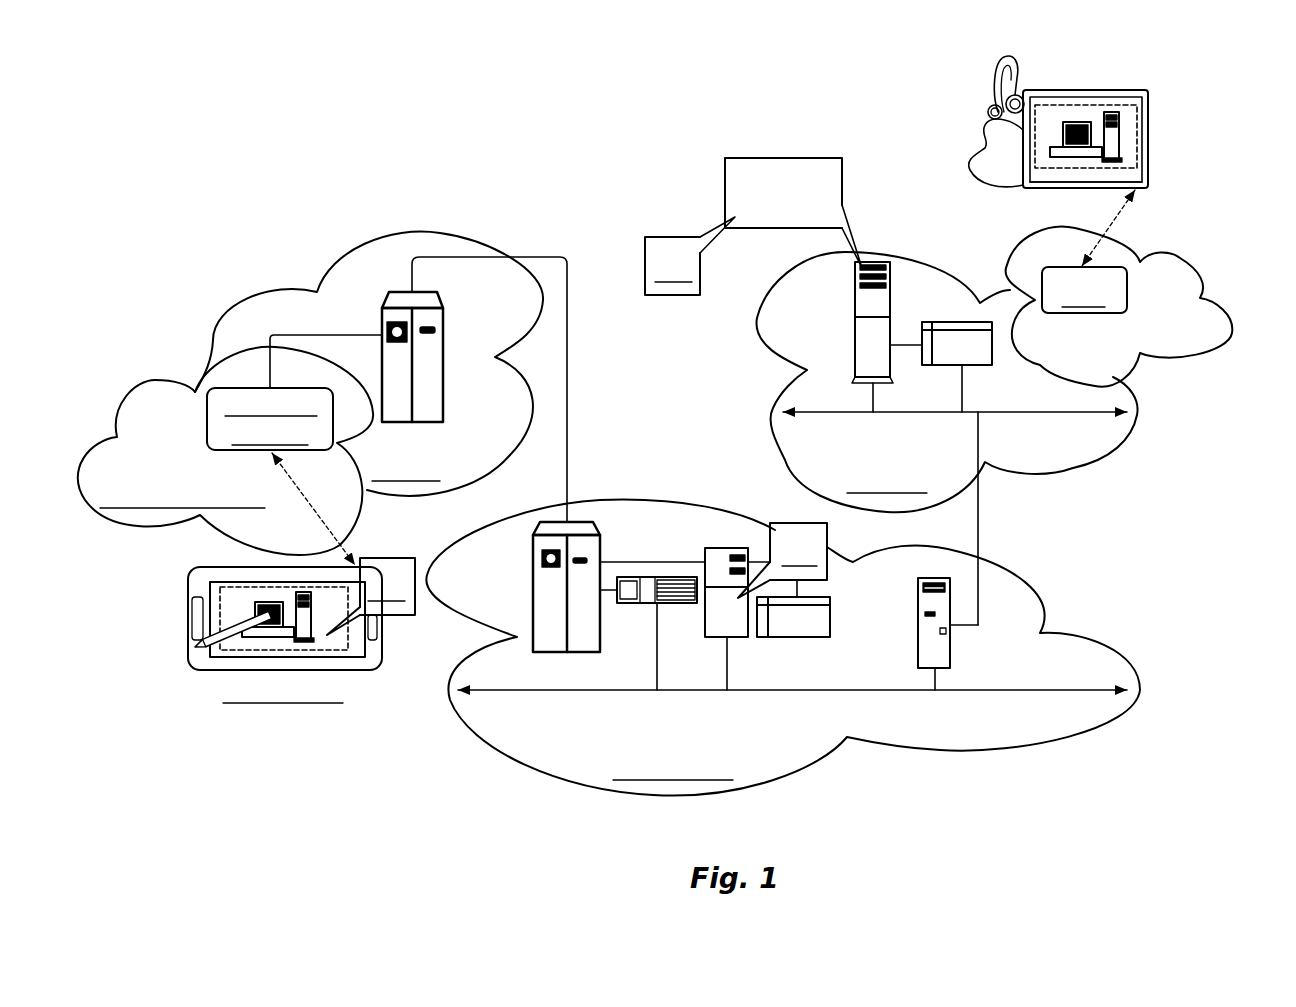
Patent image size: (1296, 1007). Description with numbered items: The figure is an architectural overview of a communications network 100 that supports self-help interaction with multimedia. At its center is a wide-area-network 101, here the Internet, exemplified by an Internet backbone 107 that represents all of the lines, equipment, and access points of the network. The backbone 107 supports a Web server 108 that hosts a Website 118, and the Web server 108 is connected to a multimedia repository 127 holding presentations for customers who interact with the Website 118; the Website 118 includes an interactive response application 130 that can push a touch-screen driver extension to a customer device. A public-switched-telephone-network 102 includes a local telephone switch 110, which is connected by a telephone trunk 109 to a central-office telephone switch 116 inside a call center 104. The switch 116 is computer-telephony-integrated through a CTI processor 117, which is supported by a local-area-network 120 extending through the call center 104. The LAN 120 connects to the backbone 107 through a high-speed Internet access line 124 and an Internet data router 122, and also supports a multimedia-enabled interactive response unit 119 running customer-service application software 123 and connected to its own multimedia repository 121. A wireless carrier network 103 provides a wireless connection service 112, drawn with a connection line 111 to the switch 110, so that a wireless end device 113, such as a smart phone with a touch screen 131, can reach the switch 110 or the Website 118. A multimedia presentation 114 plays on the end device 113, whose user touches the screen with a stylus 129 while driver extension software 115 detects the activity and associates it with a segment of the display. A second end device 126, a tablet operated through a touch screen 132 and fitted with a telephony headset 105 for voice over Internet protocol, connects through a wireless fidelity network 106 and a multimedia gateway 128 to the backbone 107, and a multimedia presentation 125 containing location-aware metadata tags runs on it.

The communications network 100 is at (658, 215).
The wide-area-network 101 is at (770, 395).
The public-switched-telephone-network 102 is at (313, 257).
The wireless carrier network 103 is at (185, 523).
The call center 104 is at (1048, 628).
The telephony headset 105 is at (990, 122).
The wireless fidelity network 106 is at (1207, 297).
The Internet backbone 107 is at (892, 413).
The Web server 108 is at (855, 313).
The telephone trunk 109 is at (568, 393).
The local telephone switch 110 is at (443, 353).
The connection line to wireless service 111 is at (340, 333).
The wireless connection service 112 is at (207, 413).
The wireless end device 113 is at (187, 592).
The multimedia presentation 114 is at (348, 642).
The touch-screen driver extension software 115 is at (380, 558).
The central-office telephone switch 116 is at (533, 592).
The CTI processor 117 is at (673, 578).
The Website 118 is at (702, 618).
The interactive response unit 119 is at (727, 548).
The local-area-network 120 is at (610, 690).
The multimedia repository 121 is at (830, 620).
The Internet data router 122 is at (918, 635).
The customer-service application software 123 is at (800, 523).
The high-speed Internet access line 124 is at (978, 535).
The multimedia presentation 125 is at (1138, 158).
The end device 126 is at (1053, 190).
The multimedia repository 127 is at (973, 320).
The multimedia gateway 128 is at (1100, 313).
The stylus 129 is at (200, 640).
The interactive response application 130 is at (843, 197).
The touch screen 131 is at (645, 270).
The touch screen 132 is at (1073, 90).